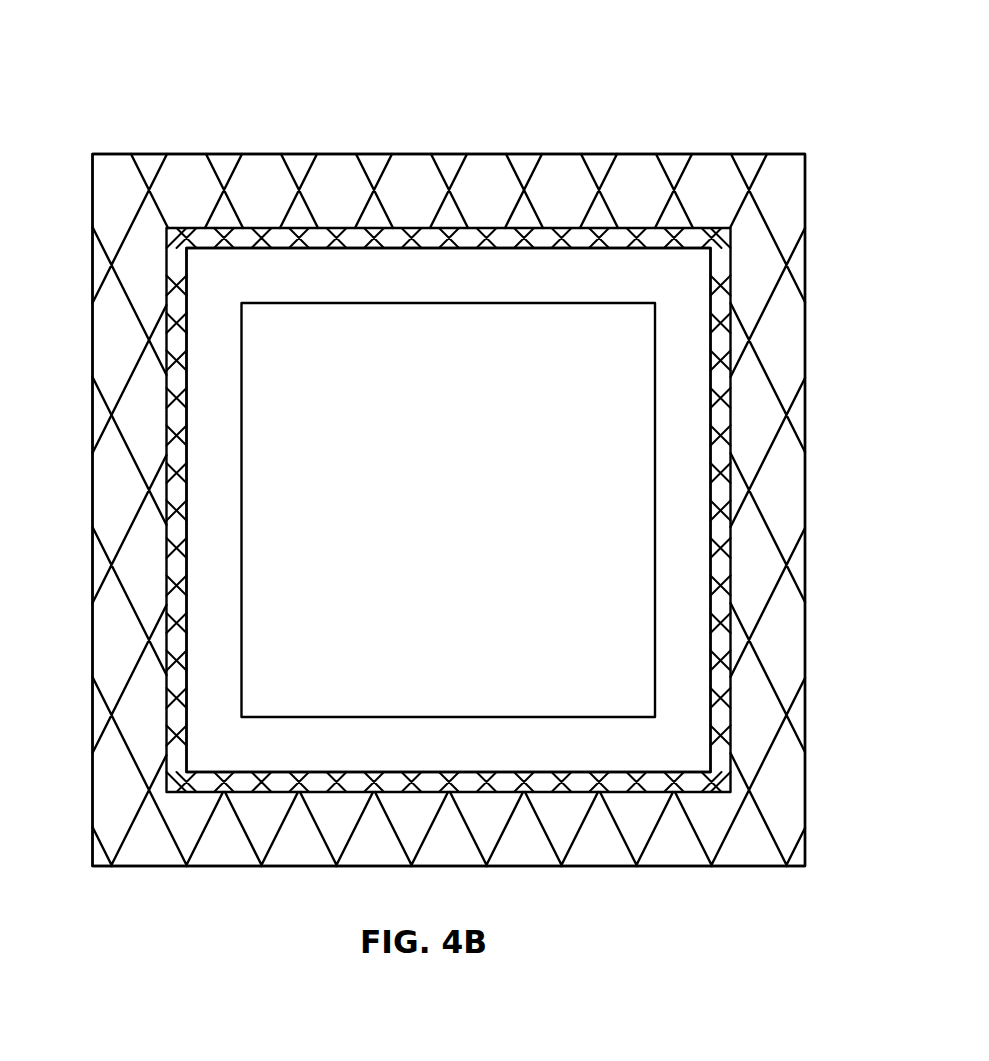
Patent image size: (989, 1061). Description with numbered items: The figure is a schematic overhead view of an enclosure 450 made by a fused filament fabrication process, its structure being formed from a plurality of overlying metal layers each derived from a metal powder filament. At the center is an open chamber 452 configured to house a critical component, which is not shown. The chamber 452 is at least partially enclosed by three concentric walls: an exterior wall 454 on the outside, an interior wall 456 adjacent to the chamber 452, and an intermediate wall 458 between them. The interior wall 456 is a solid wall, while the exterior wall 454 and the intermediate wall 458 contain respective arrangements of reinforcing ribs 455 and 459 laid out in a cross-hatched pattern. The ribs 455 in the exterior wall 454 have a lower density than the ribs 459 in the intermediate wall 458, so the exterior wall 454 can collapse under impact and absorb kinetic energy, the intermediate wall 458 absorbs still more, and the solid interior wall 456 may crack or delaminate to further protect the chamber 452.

The enclosure 450 is at (100, 68).
The chamber 452 is at (468, 520).
The exterior wall 454 is at (103, 187).
The reinforcing ribs 455 is at (101, 433).
The interior wall 456 is at (230, 437).
The intermediate wall 458 is at (725, 239).
The reinforcing ribs 459 is at (727, 362).